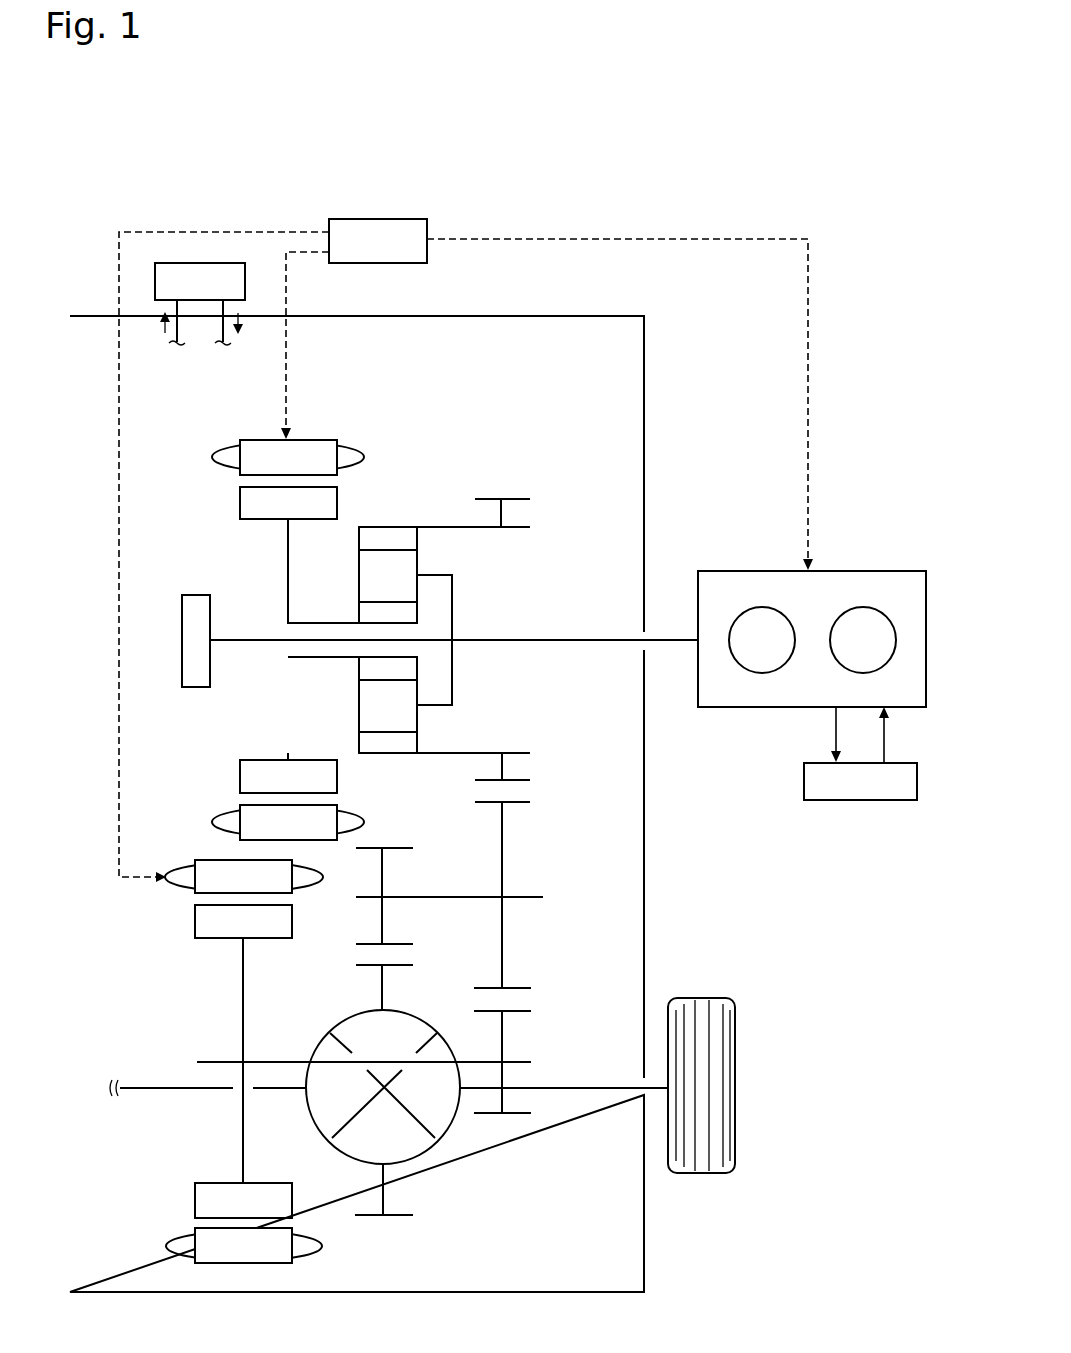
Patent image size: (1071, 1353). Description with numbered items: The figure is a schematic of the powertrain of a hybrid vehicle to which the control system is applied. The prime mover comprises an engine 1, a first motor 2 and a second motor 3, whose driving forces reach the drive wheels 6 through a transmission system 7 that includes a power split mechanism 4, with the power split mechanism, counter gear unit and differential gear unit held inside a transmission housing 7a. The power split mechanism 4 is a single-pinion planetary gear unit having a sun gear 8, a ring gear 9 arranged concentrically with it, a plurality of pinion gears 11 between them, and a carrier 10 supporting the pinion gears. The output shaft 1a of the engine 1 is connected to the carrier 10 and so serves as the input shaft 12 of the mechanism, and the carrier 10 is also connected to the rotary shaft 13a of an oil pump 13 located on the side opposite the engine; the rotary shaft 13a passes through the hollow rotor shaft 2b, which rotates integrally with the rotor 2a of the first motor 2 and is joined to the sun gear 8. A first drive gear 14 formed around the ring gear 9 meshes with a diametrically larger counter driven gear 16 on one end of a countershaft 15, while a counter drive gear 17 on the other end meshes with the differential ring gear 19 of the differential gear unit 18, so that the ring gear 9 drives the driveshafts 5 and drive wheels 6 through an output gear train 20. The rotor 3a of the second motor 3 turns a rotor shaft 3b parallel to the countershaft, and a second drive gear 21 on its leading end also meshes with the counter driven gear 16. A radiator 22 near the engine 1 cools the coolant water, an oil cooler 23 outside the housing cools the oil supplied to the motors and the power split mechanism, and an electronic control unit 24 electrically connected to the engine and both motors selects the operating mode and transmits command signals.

The engine 1 is at (843, 570).
The output shaft 1a is at (677, 642).
The first motor 2 is at (198, 487).
The rotor 2a is at (240, 780).
The rotor shaft 2b is at (330, 620).
The second motor 3 is at (166, 1213).
The rotor 3a is at (195, 928).
The rotor shaft 3b is at (281, 1060).
The power split mechanism 4 is at (416, 587).
The driveshafts 5 is at (165, 1090).
The drive wheels 6 is at (703, 1175).
The transmission system 7 is at (96, 313).
The transmission housing 7a is at (548, 315).
The sun gear 8 is at (368, 666).
The ring gear 9 is at (393, 526).
The carrier 10 is at (455, 599).
The pinion gears 11 is at (404, 552).
The input shaft 12 is at (533, 644).
The oil pump 13 is at (192, 688).
The rotary shaft 13a is at (240, 642).
The first drive gear 14 is at (518, 498).
The countershaft 15 is at (457, 894).
The counter driven gear 16 is at (520, 803).
The counter drive gear 17 is at (400, 846).
The differential gear unit 18 is at (422, 1150).
The differential ring gear 19 is at (395, 1217).
The output gear train 20 is at (552, 883).
The second drive gear 21 is at (520, 1012).
The radiator 22 is at (860, 802).
The oil cooler 23 is at (200, 262).
The electronic control unit 24 is at (378, 218).